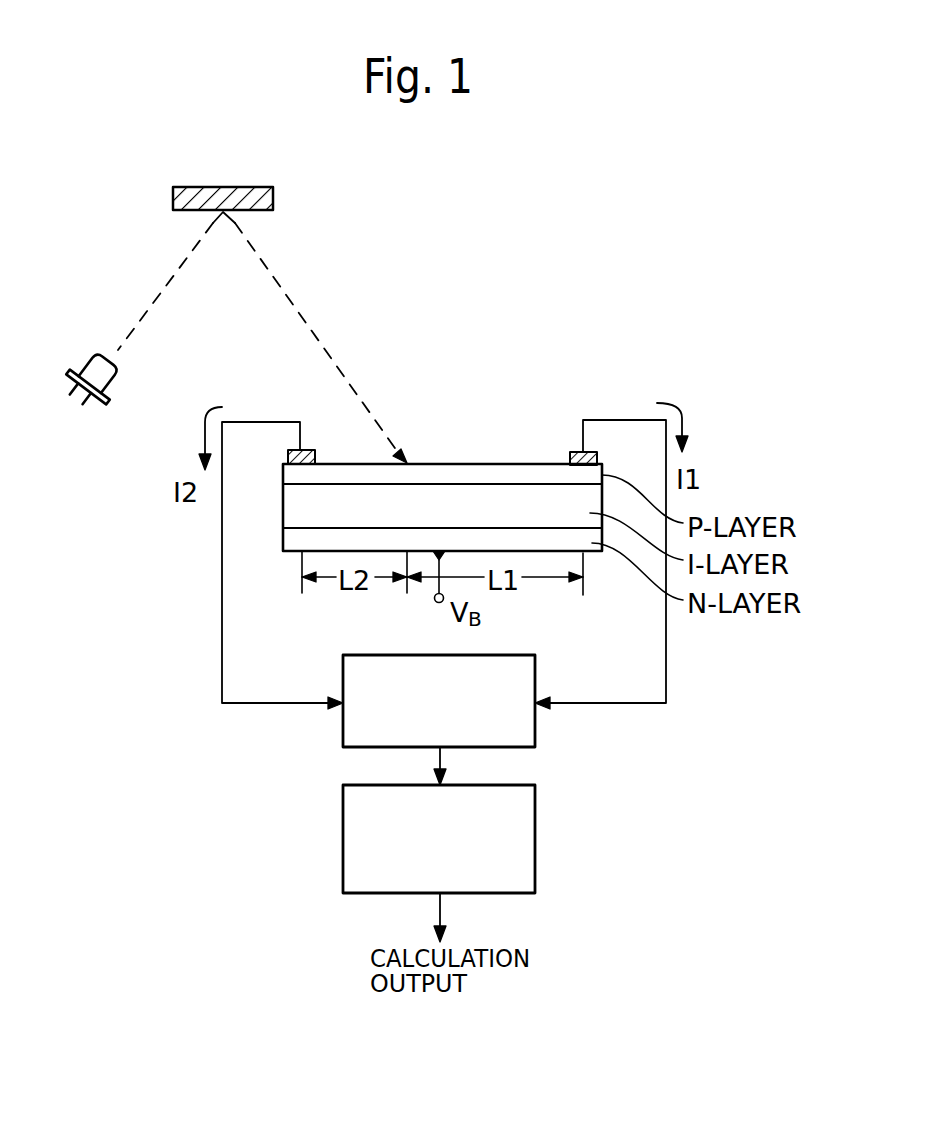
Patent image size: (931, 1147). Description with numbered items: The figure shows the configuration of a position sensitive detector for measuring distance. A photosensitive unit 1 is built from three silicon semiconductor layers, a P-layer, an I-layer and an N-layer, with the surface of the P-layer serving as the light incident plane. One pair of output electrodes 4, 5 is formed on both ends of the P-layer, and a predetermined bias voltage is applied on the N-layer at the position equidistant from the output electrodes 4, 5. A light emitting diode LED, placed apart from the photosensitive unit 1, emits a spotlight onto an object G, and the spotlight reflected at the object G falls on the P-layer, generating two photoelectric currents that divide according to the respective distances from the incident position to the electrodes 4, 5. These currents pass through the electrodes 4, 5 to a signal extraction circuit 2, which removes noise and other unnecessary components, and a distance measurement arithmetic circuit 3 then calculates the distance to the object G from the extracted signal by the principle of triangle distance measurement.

The photosensitive unit 1 is at (500, 430).
The signal extraction circuit 2 is at (537, 668).
The distance measurement arithmetic circuit 3 is at (537, 796).
The output electrode 4 is at (576, 451).
The output electrode 5 is at (306, 449).
The object G is at (273, 198).
The light emitting diode LED is at (120, 371).